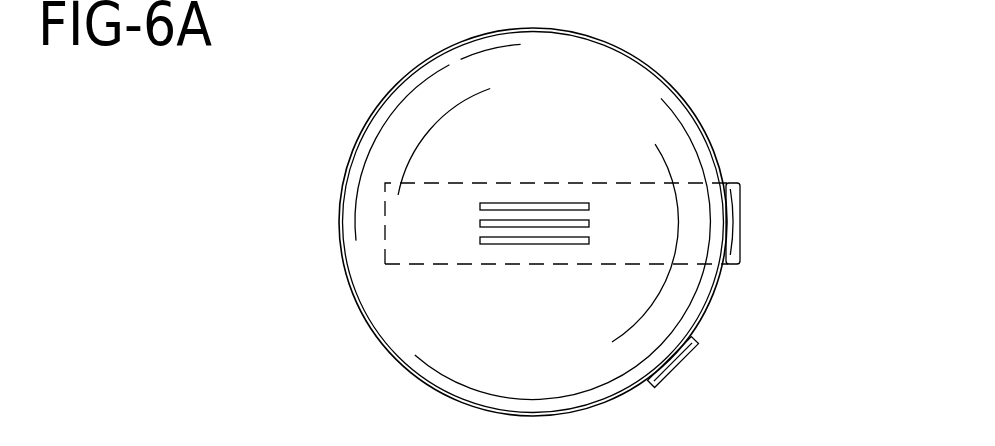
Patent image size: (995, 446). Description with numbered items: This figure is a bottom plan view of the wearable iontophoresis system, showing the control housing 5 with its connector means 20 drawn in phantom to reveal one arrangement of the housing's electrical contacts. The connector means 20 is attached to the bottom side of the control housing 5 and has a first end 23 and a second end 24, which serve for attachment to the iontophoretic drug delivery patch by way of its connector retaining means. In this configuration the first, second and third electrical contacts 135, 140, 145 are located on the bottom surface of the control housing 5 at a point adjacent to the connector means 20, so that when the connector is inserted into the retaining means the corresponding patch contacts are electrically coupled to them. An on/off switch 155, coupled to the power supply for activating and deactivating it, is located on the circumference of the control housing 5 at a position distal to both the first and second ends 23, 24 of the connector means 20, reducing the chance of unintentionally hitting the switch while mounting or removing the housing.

The control housing 5 is at (685, 100).
The connector means 20 is at (432, 183).
The first end 23 is at (743, 212).
The second end 24 is at (385, 212).
The first electrical contact 135 is at (480, 223).
The second electrical contact 140 is at (480, 207).
The third electrical contact 145 is at (480, 240).
The on/off switch 155 is at (692, 357).